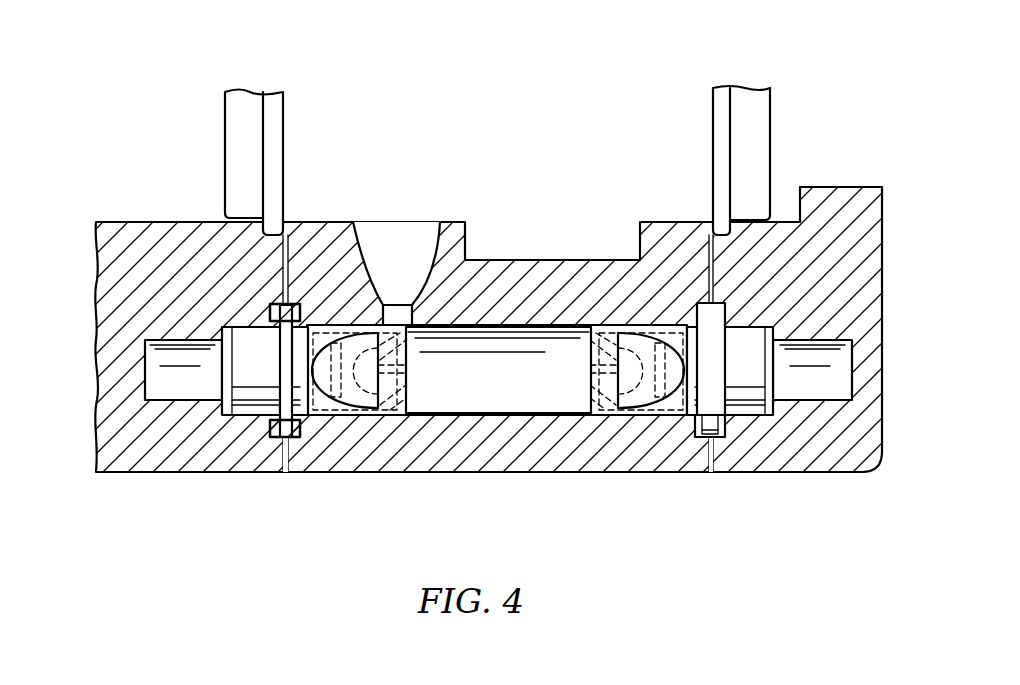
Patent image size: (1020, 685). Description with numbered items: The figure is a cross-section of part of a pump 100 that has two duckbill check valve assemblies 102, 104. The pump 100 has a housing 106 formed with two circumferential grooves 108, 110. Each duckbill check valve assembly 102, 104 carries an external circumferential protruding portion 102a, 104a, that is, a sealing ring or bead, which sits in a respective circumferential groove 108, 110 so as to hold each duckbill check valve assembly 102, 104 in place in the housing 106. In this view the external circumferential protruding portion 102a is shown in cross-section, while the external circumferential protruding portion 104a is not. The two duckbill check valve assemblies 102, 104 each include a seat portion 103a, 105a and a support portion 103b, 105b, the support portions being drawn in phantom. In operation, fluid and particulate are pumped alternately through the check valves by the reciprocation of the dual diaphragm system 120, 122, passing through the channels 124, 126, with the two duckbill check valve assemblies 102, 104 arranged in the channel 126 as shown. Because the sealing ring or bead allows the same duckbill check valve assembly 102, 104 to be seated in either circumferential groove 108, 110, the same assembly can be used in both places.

The pump 100 is at (620, 93).
The duckbill check valve assembly 102 is at (306, 412).
The external circumferential protruding portion 102a is at (283, 437).
The seat portion 103a is at (225, 395).
The support portion 103b is at (398, 393).
The duckbill check valve assembly 104 is at (695, 408).
The external circumferential protruding portion 104a is at (718, 440).
The seat portion 105a is at (773, 395).
The support portion 105b is at (594, 392).
The housing 106 is at (512, 277).
The circumferential groove 108 is at (302, 310).
The circumferential groove 110 is at (728, 308).
The dual diaphragm system 120 is at (240, 123).
The dual diaphragm system 122 is at (760, 120).
The channel 124 is at (430, 258).
The channel 126 is at (530, 333).